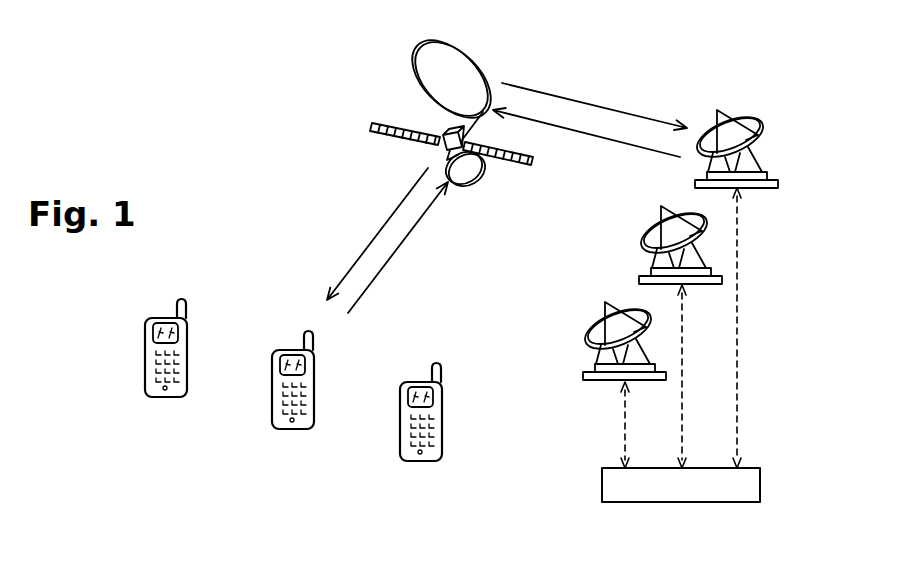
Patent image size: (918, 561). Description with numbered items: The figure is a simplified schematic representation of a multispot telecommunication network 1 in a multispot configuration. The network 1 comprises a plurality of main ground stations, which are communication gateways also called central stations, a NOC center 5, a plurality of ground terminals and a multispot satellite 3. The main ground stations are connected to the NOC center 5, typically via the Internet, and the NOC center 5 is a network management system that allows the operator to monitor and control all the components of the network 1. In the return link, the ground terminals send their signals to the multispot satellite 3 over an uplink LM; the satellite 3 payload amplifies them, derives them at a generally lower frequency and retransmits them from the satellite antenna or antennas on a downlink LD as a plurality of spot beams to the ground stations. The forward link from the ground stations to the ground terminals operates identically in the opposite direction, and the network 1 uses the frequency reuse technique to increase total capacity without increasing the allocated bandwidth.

The multispot telecommunication network 1 is at (305, 172).
The multispot satellite 3 is at (433, 80).
The NOC center 5 is at (608, 488).
The downlink LD is at (600, 107).
The uplink LM is at (408, 235).